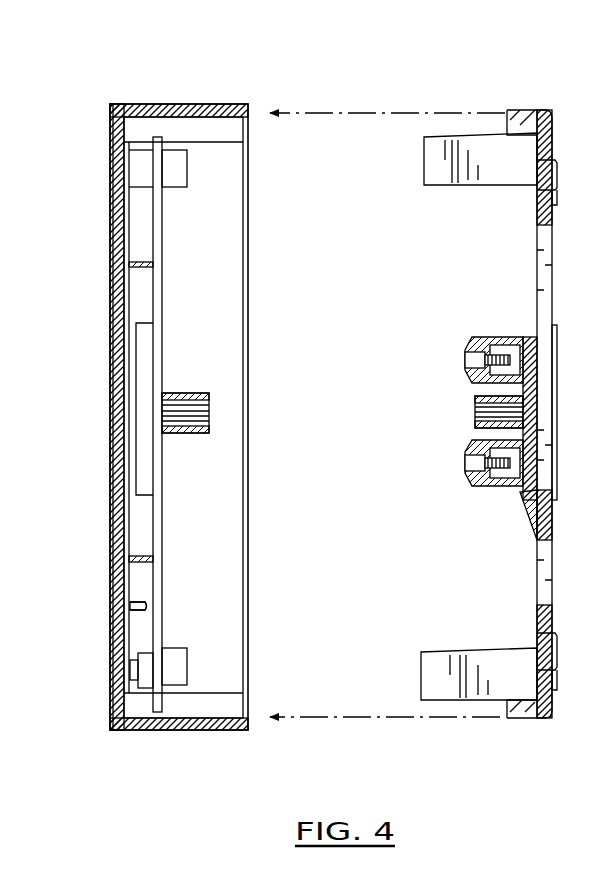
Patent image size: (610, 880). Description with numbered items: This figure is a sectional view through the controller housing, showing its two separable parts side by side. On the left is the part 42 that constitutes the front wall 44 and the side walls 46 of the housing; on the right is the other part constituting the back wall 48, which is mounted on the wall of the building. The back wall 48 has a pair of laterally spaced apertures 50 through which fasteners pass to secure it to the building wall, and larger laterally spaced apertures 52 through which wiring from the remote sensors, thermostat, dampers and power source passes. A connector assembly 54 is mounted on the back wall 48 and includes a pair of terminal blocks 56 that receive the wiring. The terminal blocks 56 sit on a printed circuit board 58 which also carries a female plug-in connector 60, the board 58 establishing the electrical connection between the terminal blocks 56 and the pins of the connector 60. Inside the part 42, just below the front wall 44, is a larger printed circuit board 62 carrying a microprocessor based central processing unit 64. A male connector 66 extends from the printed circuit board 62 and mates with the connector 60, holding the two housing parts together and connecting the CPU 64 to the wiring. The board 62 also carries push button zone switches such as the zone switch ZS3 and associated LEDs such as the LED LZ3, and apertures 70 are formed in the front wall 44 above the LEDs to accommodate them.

The part 42 is at (127, 96).
The front wall 44 is at (129, 316).
The side walls 46 is at (214, 107).
The back wall 48 is at (567, 237).
The apertures 50 is at (552, 172).
The apertures 52 is at (545, 275).
The connector assembly 54 is at (497, 511).
The terminal blocks 56 is at (480, 338).
The printed circuit board 58 is at (533, 415).
The female plug-in connector 60 is at (477, 410).
The printed circuit board 62 is at (160, 283).
The central processing unit 64 is at (145, 480).
The male connector 66 is at (192, 393).
The apertures 70 is at (121, 603).
The LED LZ3 is at (137, 607).
The zone switch ZS3 is at (126, 695).